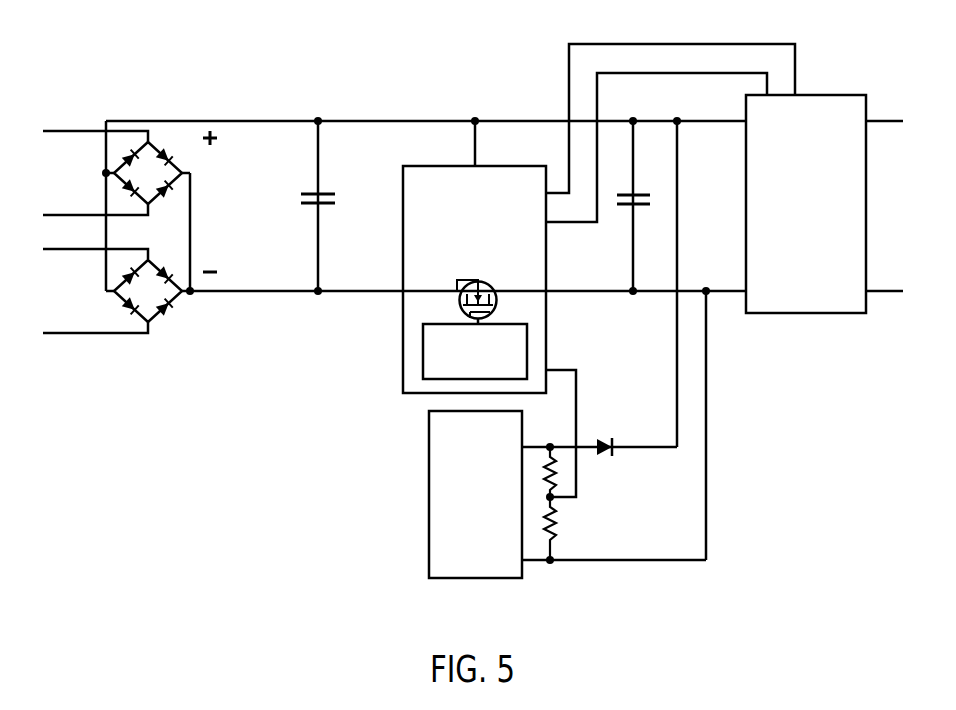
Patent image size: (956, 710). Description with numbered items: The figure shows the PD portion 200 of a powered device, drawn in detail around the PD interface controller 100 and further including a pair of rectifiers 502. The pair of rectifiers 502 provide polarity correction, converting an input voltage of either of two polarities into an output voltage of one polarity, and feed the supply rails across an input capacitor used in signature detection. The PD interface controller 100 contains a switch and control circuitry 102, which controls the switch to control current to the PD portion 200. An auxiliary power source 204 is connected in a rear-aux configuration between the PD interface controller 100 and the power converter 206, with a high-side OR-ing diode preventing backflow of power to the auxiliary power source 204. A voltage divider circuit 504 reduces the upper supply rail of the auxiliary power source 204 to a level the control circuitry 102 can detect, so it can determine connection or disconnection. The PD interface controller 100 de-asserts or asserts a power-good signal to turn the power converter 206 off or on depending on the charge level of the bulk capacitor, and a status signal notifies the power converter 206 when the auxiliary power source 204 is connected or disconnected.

The PD interface controller 100 is at (392, 342).
The control circuitry 102 is at (475, 351).
The PD portion 200 is at (463, 73).
The auxiliary power source 204 is at (489, 494).
The power converter 206 is at (806, 204).
The pair of rectifiers 502 is at (170, 103).
The voltage divider circuit 504 is at (575, 513).